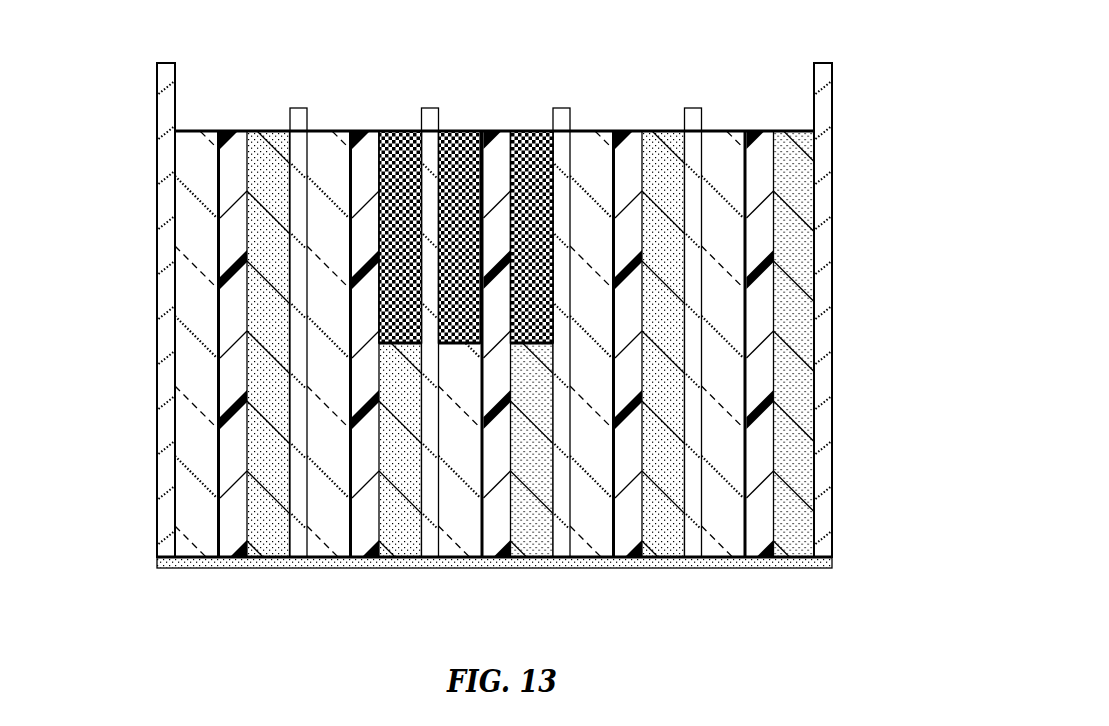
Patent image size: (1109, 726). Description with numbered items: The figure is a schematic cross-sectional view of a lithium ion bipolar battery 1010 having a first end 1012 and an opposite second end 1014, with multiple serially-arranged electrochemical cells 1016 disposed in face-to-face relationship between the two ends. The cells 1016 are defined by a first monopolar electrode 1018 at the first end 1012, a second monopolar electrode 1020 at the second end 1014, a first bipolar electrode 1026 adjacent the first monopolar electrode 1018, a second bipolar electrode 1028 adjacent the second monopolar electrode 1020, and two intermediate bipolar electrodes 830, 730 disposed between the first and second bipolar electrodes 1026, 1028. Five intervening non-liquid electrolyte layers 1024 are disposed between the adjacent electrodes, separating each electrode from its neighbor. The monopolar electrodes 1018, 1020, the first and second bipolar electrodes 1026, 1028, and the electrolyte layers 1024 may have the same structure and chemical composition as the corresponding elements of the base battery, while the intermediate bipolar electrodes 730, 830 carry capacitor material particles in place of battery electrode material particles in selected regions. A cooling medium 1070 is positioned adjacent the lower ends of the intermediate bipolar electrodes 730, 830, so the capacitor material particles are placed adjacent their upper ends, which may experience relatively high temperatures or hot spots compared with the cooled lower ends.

The lithium ion bipolar battery 1010 is at (501, 337).
The first end 1012 is at (142, 496).
The second end 1014 is at (850, 462).
The electrochemical cells 1016 is at (492, 337).
The first monopolar electrode 1018 is at (197, 114).
The second monopolar electrode 1020 is at (798, 113).
The non-liquid electrolyte layers 1024 is at (233, 131).
The first bipolar electrode 1026 is at (350, 103).
The second bipolar electrode 1028 is at (745, 103).
The intermediate bipolar electrode 830 is at (482, 103).
The intermediate bipolar electrode 730 is at (613, 103).
The cooling medium 1070 is at (832, 563).